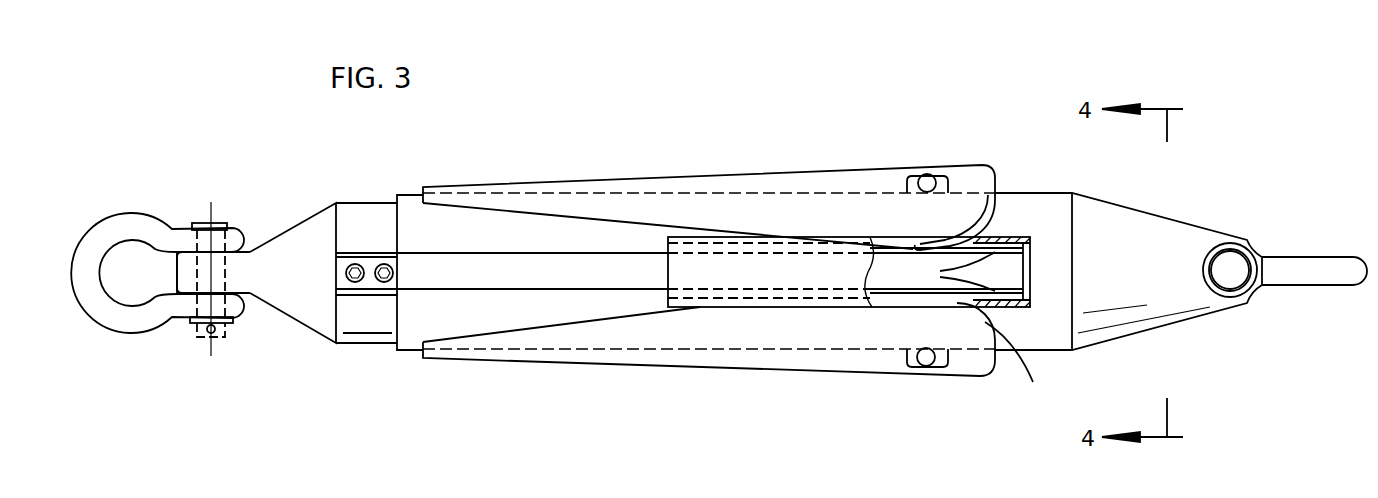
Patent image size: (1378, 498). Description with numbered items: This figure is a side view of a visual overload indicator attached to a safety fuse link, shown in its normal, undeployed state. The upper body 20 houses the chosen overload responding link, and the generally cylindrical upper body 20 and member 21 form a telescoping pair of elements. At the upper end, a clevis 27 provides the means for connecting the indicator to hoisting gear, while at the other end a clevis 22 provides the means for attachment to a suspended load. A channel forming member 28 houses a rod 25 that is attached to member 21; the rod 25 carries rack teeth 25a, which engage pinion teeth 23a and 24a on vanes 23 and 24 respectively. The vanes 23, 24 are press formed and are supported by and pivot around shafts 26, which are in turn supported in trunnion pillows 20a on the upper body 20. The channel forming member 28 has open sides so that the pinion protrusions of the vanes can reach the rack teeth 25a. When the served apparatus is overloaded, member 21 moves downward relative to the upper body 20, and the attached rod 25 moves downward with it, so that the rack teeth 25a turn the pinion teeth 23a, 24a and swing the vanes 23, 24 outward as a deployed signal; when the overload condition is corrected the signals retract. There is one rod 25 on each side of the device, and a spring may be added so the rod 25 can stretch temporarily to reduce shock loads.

The upper body 20 is at (1165, 222).
The trunnion pillows 20a is at (917, 175).
The telescoping member 21 is at (322, 207).
The clevis 22 is at (125, 213).
The vane 23 is at (747, 180).
The pinion teeth 23a is at (1001, 212).
The vane 24 is at (748, 362).
The pinion teeth 24a is at (1020, 352).
The rod 25 is at (548, 282).
The rack teeth 25a is at (944, 272).
The shafts 26 is at (929, 176).
The clevis 27 is at (1345, 286).
The channel forming members 28 is at (682, 305).